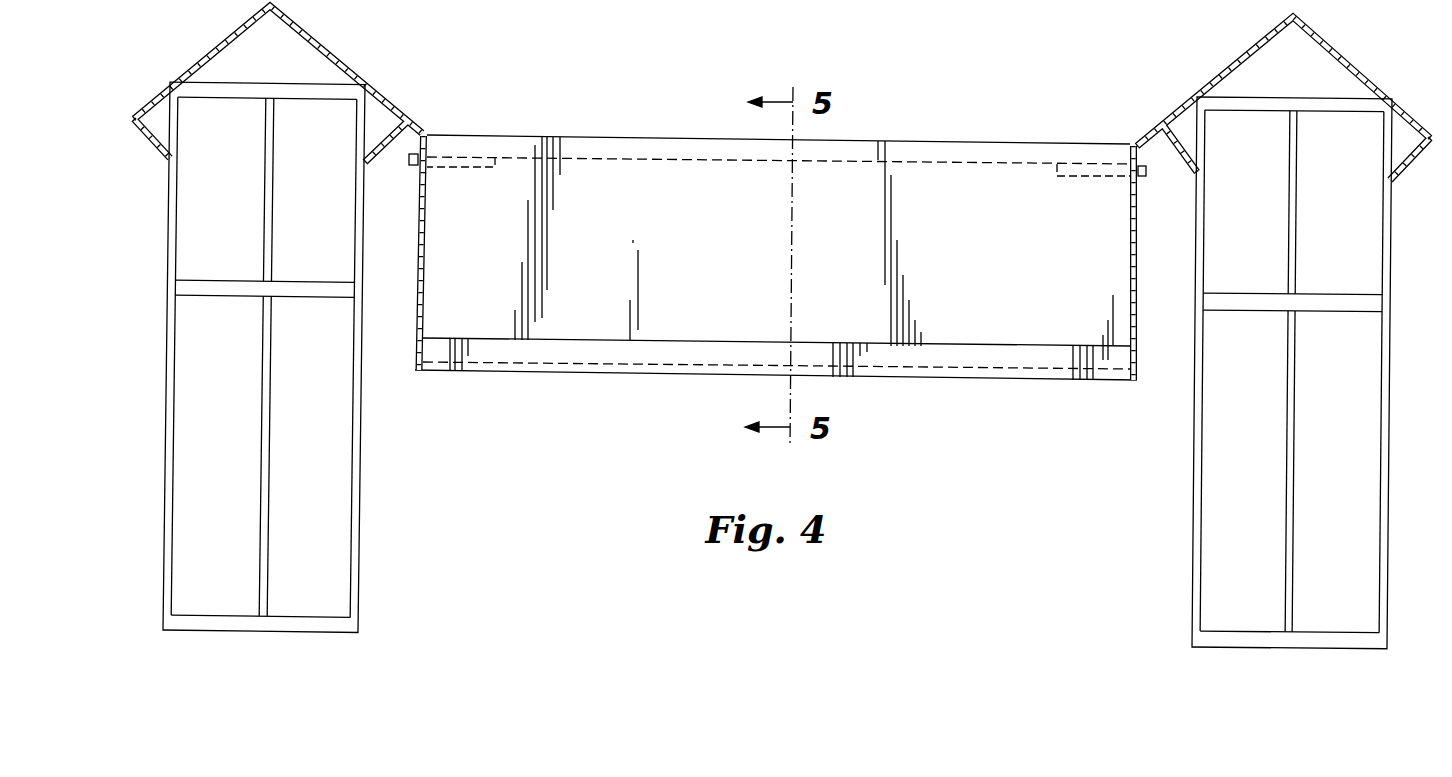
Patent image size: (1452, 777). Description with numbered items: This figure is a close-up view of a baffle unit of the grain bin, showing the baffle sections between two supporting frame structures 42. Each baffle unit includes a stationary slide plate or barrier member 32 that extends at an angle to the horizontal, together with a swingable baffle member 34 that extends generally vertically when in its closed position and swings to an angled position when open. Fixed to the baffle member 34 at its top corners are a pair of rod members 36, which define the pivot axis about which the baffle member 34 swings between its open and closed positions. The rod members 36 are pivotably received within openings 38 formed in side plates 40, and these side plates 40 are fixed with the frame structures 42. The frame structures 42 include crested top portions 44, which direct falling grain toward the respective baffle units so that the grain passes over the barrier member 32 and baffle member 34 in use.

The stationary slide plate or barrier member 32 is at (598, 312).
The swingable baffle member 34 is at (513, 363).
The rod members 36 is at (474, 158).
The openings 38 is at (428, 152).
The side plates 40 is at (416, 212).
The frame structures 42 is at (366, 443).
The crested top portions 44 is at (320, 43).